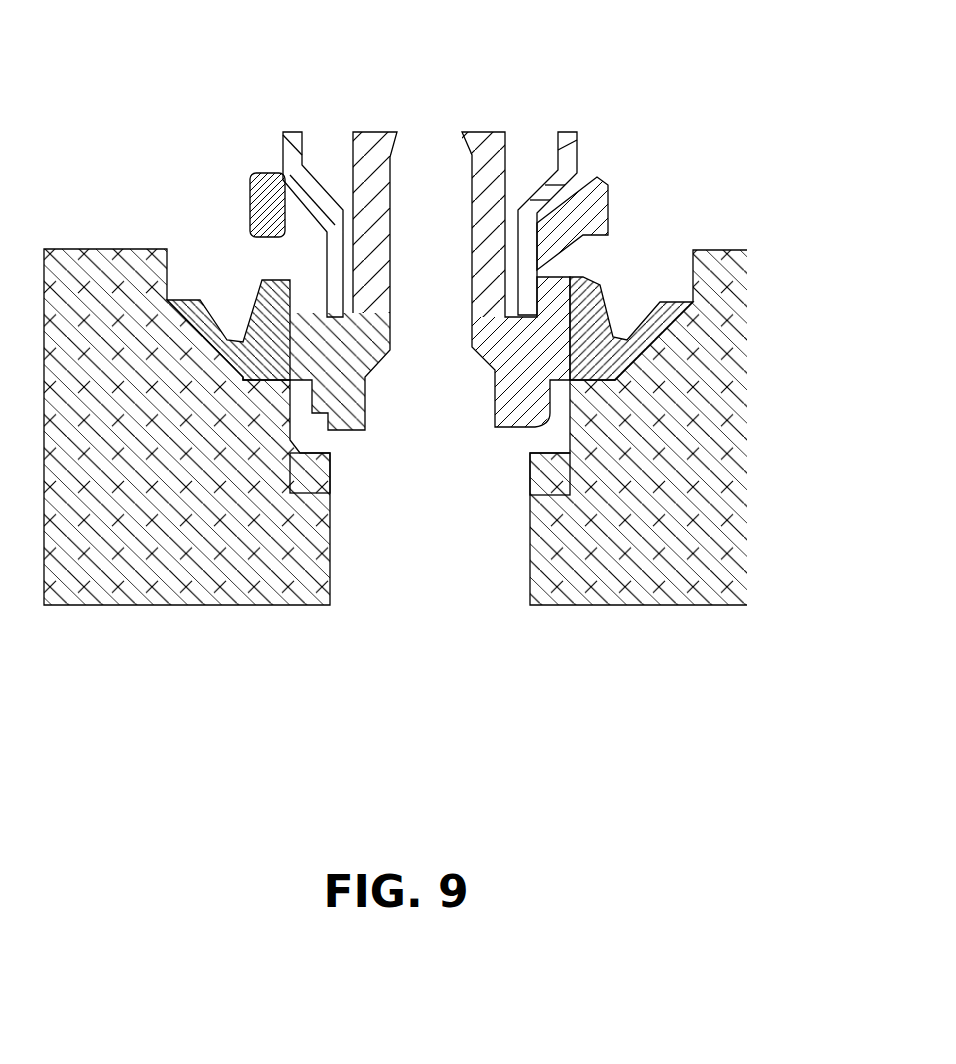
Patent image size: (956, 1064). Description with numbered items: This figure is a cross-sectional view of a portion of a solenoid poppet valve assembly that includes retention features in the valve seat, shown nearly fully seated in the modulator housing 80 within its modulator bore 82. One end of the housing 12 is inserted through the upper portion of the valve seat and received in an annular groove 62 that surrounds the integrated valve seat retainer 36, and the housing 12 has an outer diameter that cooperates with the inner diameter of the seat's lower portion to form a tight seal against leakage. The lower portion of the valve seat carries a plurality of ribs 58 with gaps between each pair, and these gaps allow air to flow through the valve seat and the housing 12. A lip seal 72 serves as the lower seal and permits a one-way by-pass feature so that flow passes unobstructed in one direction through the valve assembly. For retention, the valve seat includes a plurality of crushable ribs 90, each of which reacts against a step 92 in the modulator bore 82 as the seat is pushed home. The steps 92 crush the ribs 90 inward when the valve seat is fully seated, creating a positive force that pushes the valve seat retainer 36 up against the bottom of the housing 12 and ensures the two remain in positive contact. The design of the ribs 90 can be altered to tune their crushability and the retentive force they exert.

The housing 12 is at (575, 148).
The valve seat retainer 36 is at (483, 137).
The ribs 58 is at (311, 476).
The annular groove 62 is at (352, 293).
The lip seal 72 is at (672, 312).
The modulator housing 80 is at (735, 325).
The modulator bore 82 is at (165, 272).
The crushable ribs 90 is at (502, 412).
The step 92 is at (552, 452).